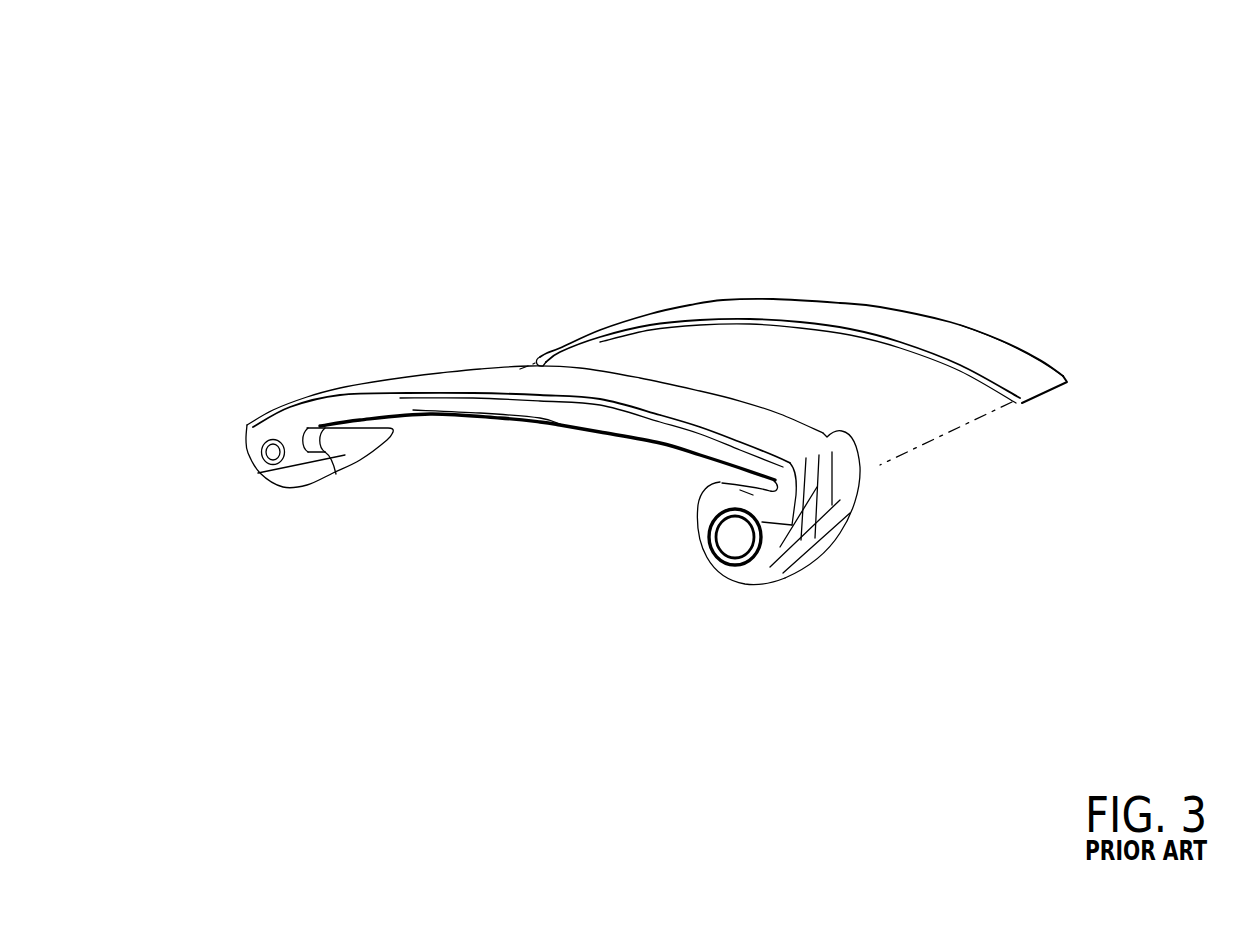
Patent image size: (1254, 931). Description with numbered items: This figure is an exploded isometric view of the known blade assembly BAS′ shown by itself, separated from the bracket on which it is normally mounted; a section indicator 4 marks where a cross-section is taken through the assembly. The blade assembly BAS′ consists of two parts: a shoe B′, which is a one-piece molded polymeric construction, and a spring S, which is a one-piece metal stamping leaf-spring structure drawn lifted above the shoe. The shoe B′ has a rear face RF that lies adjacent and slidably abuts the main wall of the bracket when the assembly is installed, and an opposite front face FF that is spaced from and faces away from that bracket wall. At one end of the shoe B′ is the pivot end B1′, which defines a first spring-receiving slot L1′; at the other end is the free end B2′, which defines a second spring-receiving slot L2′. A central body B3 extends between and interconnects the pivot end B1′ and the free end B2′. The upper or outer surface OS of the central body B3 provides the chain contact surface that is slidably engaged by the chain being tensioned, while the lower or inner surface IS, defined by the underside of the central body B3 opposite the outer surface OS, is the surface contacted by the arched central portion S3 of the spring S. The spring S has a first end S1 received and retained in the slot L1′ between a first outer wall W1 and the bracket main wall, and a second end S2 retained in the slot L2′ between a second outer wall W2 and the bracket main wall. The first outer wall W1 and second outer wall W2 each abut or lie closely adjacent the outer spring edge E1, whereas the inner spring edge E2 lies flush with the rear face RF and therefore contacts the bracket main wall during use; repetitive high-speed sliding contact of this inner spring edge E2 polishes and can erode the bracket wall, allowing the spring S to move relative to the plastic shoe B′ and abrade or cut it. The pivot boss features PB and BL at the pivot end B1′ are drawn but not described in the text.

The blade assembly BAS′ is at (245, 143).
The section line for FIG. 4 is at (557, 145).
The shoe B′ is at (463, 380).
The outer surface OS is at (402, 383).
The front face FF is at (525, 410).
The inner surface IS is at (537, 422).
The central body B3 is at (600, 420).
The rear face RF is at (790, 415).
The first spring-receiving slot L1′ is at (703, 469).
The second spring-receiving slot L2′ is at (343, 413).
The first outer wall W1 is at (700, 540).
The second outer wall W2 is at (293, 443).
The pivot bore PB is at (737, 550).
The bearing lip BL is at (713, 575).
The pivot end B1′ is at (770, 520).
The free end B2′ is at (288, 477).
The spring S is at (760, 275).
The first end of the spring S1 is at (1033, 377).
The second end of the spring S2 is at (555, 343).
The arched central portion S3 is at (827, 313).
The outer spring edge E1 is at (903, 350).
The inner spring edge E2 is at (1000, 340).